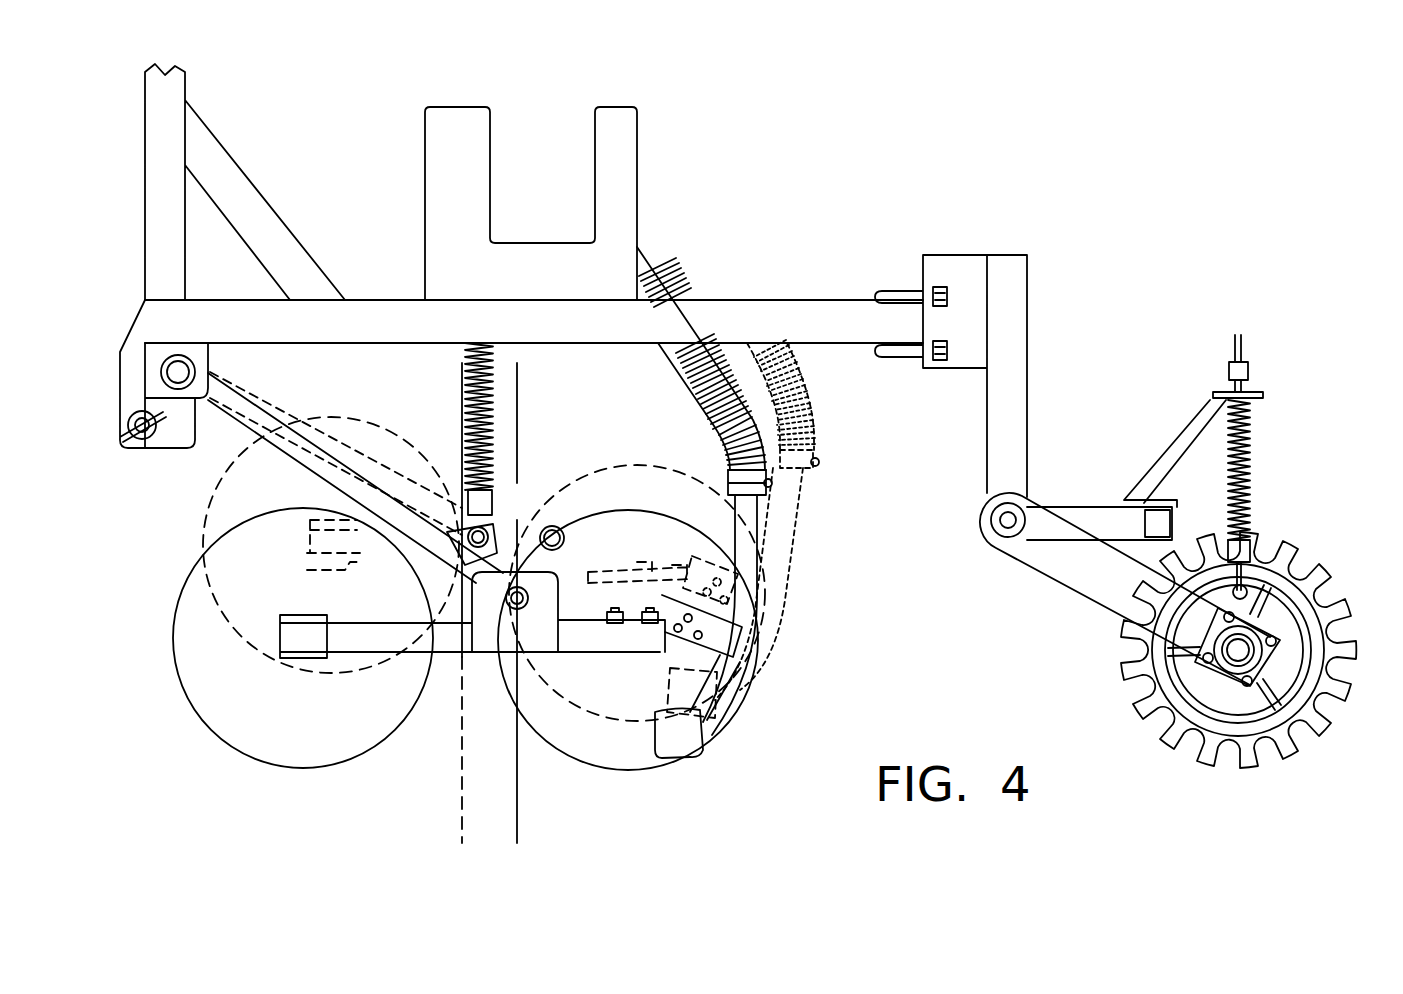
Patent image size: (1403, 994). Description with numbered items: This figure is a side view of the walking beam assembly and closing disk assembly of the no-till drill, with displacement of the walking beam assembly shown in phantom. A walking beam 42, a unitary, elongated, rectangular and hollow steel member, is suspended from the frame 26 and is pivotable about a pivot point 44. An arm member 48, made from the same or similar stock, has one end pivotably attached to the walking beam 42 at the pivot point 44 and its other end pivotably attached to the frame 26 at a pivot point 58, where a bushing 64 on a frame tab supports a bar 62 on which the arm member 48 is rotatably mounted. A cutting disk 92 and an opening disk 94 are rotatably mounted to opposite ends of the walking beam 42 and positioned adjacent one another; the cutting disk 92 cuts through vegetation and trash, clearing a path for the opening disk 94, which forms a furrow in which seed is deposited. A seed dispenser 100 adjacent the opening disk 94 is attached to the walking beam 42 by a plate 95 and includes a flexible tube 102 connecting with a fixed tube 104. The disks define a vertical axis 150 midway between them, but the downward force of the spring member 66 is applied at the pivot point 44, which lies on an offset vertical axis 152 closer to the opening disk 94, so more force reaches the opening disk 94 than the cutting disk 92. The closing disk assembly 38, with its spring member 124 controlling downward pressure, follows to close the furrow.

The frame 26 is at (752, 320).
The closing disk assembly 38 is at (1343, 571).
The walking beam 42 is at (452, 638).
The pivot point 44 is at (560, 585).
The arm member 48 is at (290, 452).
The pivot point 58 is at (180, 372).
The bar 62 is at (178, 373).
The bushing 64 is at (157, 380).
The spring member 66 is at (448, 425).
The cutting disk 92 is at (305, 740).
The opening disk 94 is at (607, 755).
The plate 95 is at (742, 660).
The seed dispenser 100 is at (730, 745).
The flexible tube 102 is at (658, 283).
The fixed tube 104 is at (750, 552).
The spring member 124 is at (1265, 456).
The vertical axis 150 is at (458, 795).
The vertical axis 152 is at (517, 795).